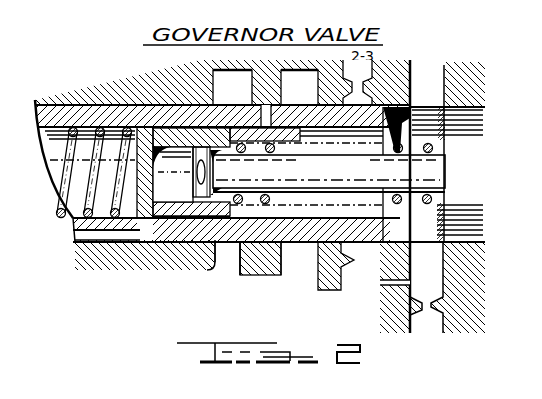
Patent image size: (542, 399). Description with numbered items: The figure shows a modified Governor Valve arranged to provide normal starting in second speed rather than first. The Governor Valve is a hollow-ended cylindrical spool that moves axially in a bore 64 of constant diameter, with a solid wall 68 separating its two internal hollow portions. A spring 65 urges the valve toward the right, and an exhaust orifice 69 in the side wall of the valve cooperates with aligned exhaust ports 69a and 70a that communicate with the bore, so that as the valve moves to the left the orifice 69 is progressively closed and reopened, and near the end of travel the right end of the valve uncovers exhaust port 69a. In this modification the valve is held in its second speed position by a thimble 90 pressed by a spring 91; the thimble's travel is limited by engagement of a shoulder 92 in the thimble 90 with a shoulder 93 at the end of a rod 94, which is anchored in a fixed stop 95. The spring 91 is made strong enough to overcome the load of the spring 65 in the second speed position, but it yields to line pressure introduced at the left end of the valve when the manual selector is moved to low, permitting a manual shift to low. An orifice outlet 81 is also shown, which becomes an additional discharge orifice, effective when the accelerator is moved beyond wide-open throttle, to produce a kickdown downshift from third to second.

The bore 64 is at (98, 238).
The spring 65 is at (66, 178).
The solid wall 68 is at (142, 233).
The exhaust orifice 69 is at (329, 175).
The exhaust port 69a is at (306, 258).
The exhaust port 70a is at (240, 253).
The orifice outlet 81 is at (366, 267).
The thimble 90 is at (200, 214).
The spring 91 is at (266, 128).
The shoulder 92 is at (173, 174).
The shoulder 93 is at (213, 168).
The rod 94 is at (428, 181).
The fixed stop 95 is at (451, 181).